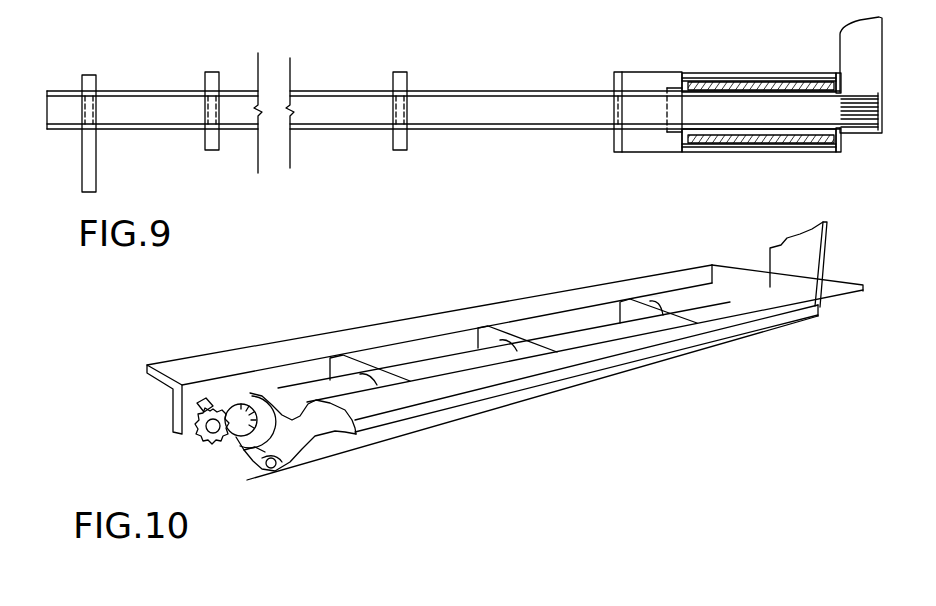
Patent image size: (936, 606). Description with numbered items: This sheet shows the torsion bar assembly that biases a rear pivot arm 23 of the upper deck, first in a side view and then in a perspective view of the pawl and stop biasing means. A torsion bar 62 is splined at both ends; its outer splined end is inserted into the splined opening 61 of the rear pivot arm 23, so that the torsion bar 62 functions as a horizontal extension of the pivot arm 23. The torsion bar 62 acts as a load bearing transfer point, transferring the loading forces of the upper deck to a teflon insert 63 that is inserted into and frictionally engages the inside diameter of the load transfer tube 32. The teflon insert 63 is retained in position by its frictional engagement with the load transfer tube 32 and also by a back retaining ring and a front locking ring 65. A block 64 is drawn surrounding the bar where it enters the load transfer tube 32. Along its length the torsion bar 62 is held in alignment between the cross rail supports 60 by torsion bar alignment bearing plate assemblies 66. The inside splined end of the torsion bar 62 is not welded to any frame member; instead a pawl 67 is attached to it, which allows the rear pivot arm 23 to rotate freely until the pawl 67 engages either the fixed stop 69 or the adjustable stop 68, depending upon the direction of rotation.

In FIG. 9, the rear pivot arm 23 is at (876, 48).
In FIG. 10, the rear pivot arm 23 is at (800, 259).
In FIG. 9, the load transfer tube 32 is at (723, 150).
In FIG. 10, the load transfer tube 32 is at (757, 277).
In FIG. 9, the cross rail supports 60 is at (135, 124).
In FIG. 10, the cross rail supports 60 is at (607, 288).
In FIG. 9, the splined opening 61 is at (882, 104).
In FIG. 9, the torsion bar 62 is at (503, 121).
In FIG. 10, the torsion bar 62 is at (457, 355).
In FIG. 9, the teflon insert 63 is at (743, 83).
In FIG. 10, the teflon insert 63 is at (660, 292).
In FIG. 9, the block 64 is at (613, 78).
In FIG. 9, the front locking ring 65 is at (838, 73).
In FIG. 9, the torsion bar alignment bearing plate assemblies 66 is at (210, 84).
In FIG. 10, the torsion bar alignment bearing plate assemblies 66 is at (330, 357).
In FIG. 9, the pawl 67 is at (91, 161).
In FIG. 10, the pawl 67 is at (240, 456).
In FIG. 10, the adjustable stop 68 is at (278, 468).
In FIG. 10, the fixed stop 69 is at (213, 411).